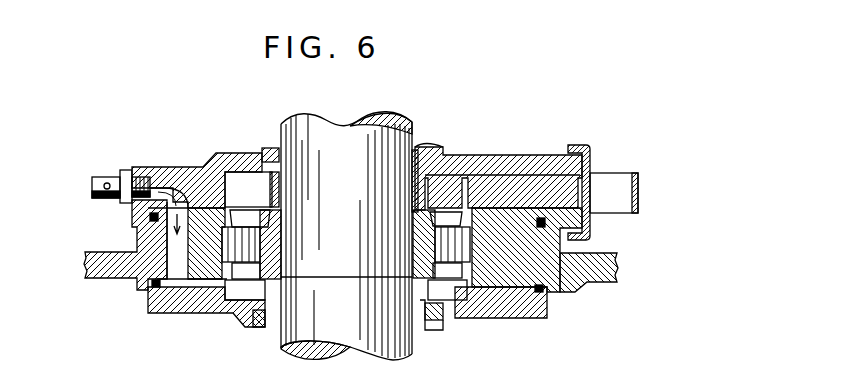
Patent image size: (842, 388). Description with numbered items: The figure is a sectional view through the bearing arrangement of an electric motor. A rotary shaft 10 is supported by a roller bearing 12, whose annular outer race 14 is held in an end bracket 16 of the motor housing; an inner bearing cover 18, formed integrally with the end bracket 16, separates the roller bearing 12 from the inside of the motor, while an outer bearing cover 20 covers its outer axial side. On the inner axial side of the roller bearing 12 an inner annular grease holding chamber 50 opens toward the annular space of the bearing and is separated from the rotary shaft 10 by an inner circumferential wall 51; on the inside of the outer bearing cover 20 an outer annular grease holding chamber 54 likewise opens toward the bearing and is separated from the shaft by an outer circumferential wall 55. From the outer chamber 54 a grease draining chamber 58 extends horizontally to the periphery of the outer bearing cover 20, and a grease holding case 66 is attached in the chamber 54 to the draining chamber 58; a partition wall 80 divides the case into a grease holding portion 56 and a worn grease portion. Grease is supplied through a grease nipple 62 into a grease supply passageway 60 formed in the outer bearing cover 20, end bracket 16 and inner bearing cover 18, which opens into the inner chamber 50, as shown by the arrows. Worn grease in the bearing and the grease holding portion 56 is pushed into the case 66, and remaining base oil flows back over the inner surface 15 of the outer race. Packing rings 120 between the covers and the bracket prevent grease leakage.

The rotary shaft 10 is at (307, 130).
The roller bearing 12 is at (225, 210).
The annular outer race 14 is at (203, 292).
The inner surface of the outer race 15 is at (472, 252).
The end bracket 16 is at (86, 263).
The inner bearing cover 18 is at (513, 318).
The outer bearing cover 20 is at (497, 155).
The inner annular grease holding chamber 50 is at (257, 297).
The inner circumferential wall 51 is at (448, 318).
The outer annular grease holding chamber 54 is at (260, 182).
The outer circumferential wall 55 is at (420, 186).
The grease holding portion 56 is at (443, 190).
The grease draining chamber 58 is at (525, 172).
The grease supply passageway 60 is at (170, 253).
The grease nipple 62 is at (100, 178).
The grease holding case 66 is at (557, 168).
The partition wall 80 is at (458, 206).
The packing rings 120 is at (149, 217).